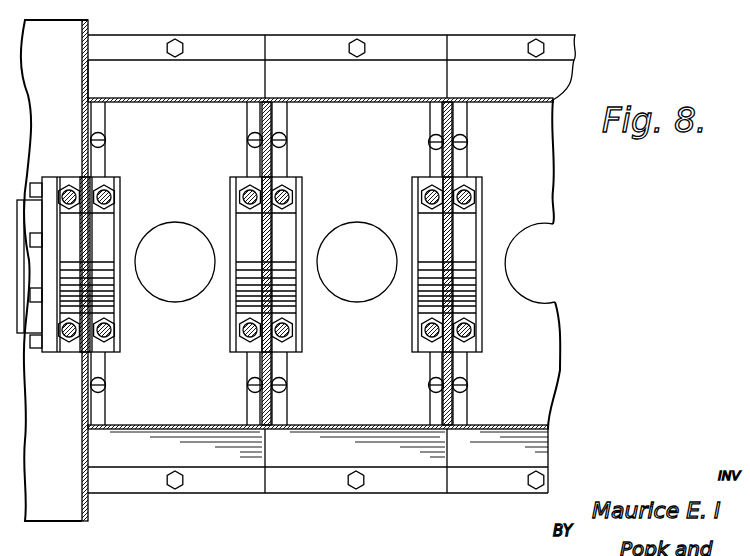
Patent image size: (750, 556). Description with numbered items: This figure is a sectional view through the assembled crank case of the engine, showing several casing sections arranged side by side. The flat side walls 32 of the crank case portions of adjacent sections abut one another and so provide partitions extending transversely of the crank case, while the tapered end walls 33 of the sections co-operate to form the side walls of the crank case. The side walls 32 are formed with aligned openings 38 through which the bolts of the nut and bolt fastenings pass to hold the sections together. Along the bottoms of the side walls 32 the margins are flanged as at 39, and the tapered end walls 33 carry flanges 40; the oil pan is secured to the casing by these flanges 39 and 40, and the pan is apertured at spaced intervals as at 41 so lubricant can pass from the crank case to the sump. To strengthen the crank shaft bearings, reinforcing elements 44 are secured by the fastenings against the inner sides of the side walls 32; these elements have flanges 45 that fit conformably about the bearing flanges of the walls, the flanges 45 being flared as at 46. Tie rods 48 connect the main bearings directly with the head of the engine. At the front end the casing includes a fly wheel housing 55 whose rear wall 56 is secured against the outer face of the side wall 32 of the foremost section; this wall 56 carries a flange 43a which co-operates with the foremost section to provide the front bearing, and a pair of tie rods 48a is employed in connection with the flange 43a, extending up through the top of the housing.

The side walls 32 is at (262, 362).
The tapered end walls 33 is at (513, 103).
The aligned openings 38 is at (180, 317).
The flanges 39 is at (248, 118).
The flanges 40 is at (228, 44).
The apertures 41 is at (160, 227).
The flange 43a is at (67, 270).
The reinforcing elements 44 is at (258, 277).
The flanges 45 is at (289, 226).
The flared portion 46 is at (412, 312).
The tie rods 48 is at (112, 196).
The tie rods 48a is at (70, 208).
The fly wheel housing 55 is at (48, 510).
The rear wall 56 is at (88, 508).